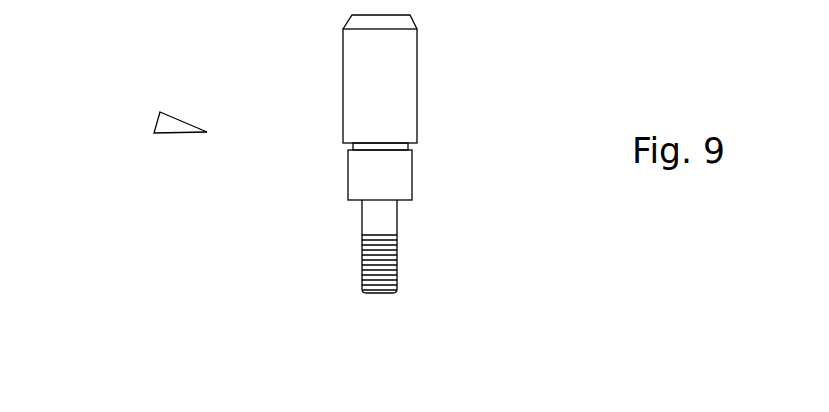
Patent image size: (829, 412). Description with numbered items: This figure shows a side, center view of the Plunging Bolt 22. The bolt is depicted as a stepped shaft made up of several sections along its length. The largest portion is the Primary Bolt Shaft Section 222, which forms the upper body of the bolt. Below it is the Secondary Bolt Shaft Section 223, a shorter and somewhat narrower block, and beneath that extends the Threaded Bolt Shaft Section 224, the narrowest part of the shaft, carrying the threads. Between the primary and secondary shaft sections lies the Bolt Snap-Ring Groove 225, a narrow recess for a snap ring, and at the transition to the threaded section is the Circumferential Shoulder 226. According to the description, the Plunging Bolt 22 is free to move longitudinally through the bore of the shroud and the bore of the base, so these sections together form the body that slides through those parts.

The Plunging Bolt 22 is at (150, 122).
The Primary Bolt Shaft Section 222 is at (417, 45).
The Secondary Bolt Shaft Section 223 is at (417, 170).
The Threaded Bolt Shaft Section 224 is at (397, 259).
The Bolt Snap-Ring Groove 225 is at (347, 145).
The Circumferential Shoulder 226 is at (358, 203).